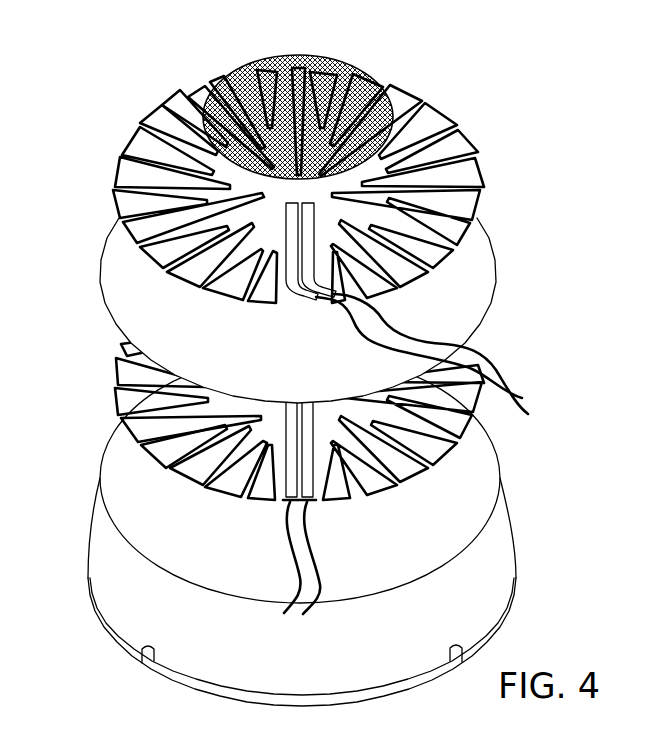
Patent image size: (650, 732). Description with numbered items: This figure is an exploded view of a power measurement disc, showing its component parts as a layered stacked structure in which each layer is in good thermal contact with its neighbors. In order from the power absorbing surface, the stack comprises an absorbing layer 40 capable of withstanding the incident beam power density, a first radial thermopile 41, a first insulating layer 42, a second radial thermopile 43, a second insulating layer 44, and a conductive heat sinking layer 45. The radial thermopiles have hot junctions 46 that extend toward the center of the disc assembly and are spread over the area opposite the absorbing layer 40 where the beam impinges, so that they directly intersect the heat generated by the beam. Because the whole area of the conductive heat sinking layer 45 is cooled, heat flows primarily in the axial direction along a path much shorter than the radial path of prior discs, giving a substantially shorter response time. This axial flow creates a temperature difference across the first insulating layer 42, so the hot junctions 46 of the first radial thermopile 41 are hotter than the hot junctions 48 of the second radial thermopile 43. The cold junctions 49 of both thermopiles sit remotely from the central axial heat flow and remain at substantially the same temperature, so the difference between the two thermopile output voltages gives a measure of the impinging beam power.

The absorbing layer 40 is at (338, 56).
The first radial thermopile 41 is at (316, 241).
The first insulating layer 42 is at (497, 288).
The second radial thermopile 43 is at (313, 471).
The second insulating layer 44 is at (483, 498).
The conductive heat sinking layer 45 is at (495, 555).
The hot junctions 46 is at (213, 157).
The hot junctions 48 is at (148, 450).
The cold junctions 49 is at (147, 265).